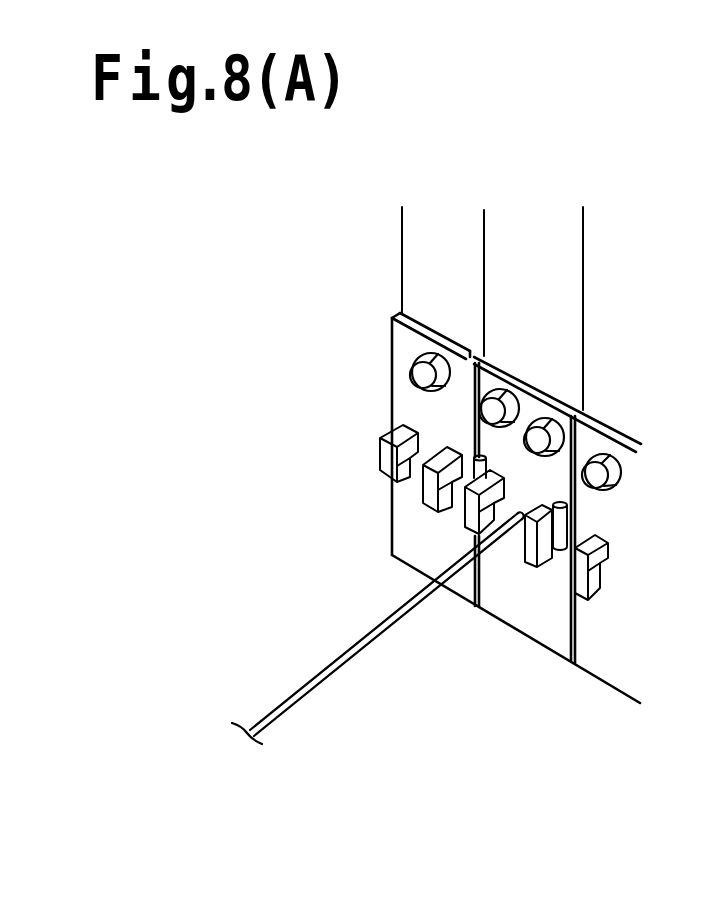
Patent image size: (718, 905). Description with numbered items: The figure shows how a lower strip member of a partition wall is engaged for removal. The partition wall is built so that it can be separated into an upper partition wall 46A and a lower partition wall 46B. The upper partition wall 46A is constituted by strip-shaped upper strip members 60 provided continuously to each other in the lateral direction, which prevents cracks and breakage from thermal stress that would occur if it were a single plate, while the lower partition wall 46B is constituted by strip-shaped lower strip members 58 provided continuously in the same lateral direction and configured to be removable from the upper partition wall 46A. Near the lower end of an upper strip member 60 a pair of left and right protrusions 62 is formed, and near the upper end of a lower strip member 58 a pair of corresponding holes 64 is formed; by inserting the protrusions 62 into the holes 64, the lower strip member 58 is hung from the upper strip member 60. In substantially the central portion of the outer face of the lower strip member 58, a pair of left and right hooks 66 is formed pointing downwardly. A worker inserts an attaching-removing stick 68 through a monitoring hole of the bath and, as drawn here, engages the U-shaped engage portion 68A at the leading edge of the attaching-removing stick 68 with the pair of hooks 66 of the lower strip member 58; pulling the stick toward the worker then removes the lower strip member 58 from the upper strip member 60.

The upper partition wall 46A is at (531, 212).
The lower partition wall 46B is at (458, 642).
The lower strip member 58 is at (420, 532).
The upper strip member 60 is at (455, 249).
The protrusion 62 is at (418, 381).
The hole 64 is at (443, 393).
The hook 66 is at (438, 492).
The attaching-removing stick 68 is at (320, 672).
The engage portion 68A is at (568, 520).